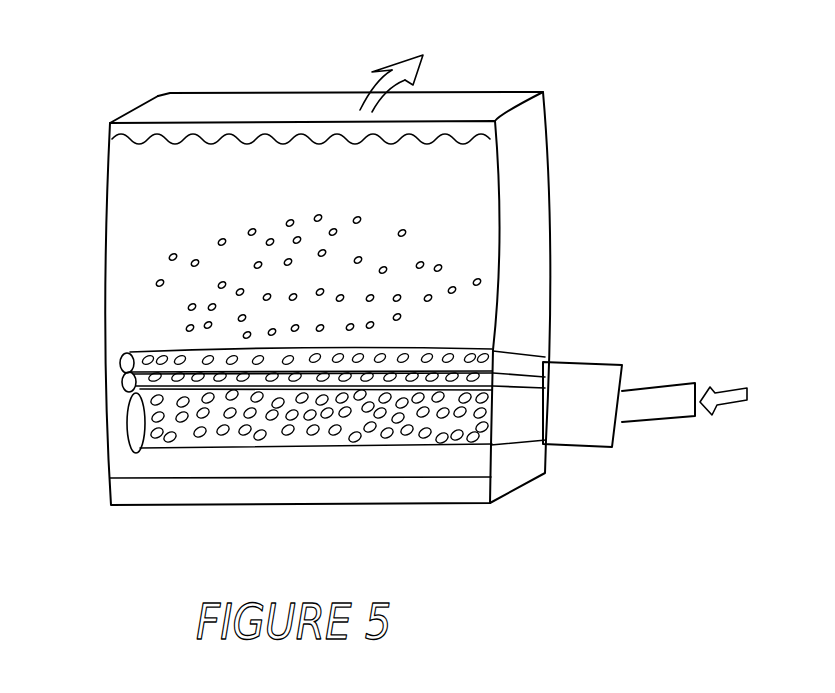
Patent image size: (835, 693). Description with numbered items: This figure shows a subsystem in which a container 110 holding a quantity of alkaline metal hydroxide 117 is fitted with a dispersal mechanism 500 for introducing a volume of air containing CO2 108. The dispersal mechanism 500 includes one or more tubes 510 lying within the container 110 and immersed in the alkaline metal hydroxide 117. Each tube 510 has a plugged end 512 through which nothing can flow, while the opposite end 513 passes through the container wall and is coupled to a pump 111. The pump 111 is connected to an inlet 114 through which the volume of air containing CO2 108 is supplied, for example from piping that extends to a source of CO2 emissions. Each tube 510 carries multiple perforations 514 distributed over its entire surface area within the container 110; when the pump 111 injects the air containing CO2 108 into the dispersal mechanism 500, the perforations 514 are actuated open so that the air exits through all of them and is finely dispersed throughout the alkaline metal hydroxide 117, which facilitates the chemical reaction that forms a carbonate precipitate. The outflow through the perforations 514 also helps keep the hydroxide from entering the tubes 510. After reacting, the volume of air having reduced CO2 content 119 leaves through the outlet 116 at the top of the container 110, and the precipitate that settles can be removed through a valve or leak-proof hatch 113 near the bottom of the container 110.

The volume of air containing CO2 108 is at (317, 216).
The container 110 is at (186, 205).
The pump 111 is at (595, 413).
The valve or leak-proof hatch 113 is at (265, 503).
The inlet 114 is at (695, 383).
The outlet 116 is at (150, 121).
The alkaline metal hydroxide 117 is at (413, 147).
The volume of air having reduced CO2 content 119 is at (428, 56).
The dispersal mechanism 500 is at (259, 383).
The tube 510 is at (311, 401).
The plugged end 512 is at (137, 425).
The opposite end 513 is at (532, 362).
The perforations 514 is at (258, 438).